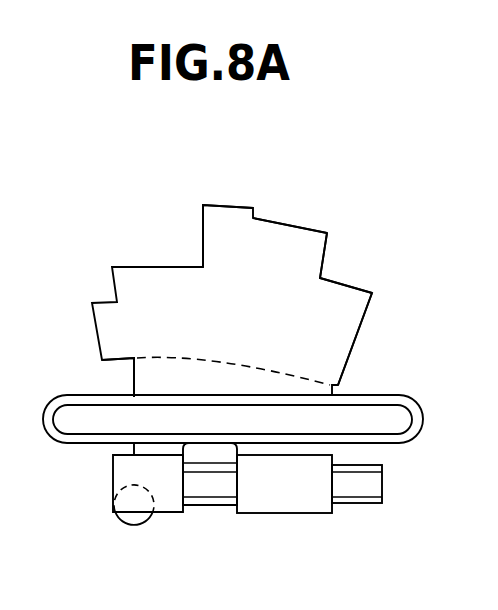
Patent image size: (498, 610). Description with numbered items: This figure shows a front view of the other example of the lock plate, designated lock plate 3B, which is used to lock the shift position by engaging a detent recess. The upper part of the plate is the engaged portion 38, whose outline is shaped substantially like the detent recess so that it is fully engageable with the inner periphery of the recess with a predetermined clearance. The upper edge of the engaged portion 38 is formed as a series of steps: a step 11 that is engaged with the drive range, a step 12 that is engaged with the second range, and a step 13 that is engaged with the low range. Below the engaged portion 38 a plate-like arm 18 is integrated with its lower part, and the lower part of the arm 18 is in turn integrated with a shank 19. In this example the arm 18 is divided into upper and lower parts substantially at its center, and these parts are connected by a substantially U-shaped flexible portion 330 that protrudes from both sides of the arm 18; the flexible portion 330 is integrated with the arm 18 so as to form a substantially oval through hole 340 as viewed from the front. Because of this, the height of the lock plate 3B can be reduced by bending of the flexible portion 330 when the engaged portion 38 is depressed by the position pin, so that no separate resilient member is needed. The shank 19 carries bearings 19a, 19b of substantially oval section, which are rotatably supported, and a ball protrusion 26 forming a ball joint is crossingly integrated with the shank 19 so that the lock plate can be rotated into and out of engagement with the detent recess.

The lock plate 3B is at (143, 252).
The step 11 is at (223, 205).
The step 12 is at (287, 223).
The step 13 is at (333, 308).
The engaged portion 38 is at (360, 288).
The arm 18 is at (183, 447).
The flexible portion 330 is at (382, 393).
The through hole 340 is at (393, 418).
The ball protrusion 26 is at (132, 525).
The shank 19 is at (293, 497).
The bearing 19a is at (362, 503).
The bearing 19b is at (213, 487).